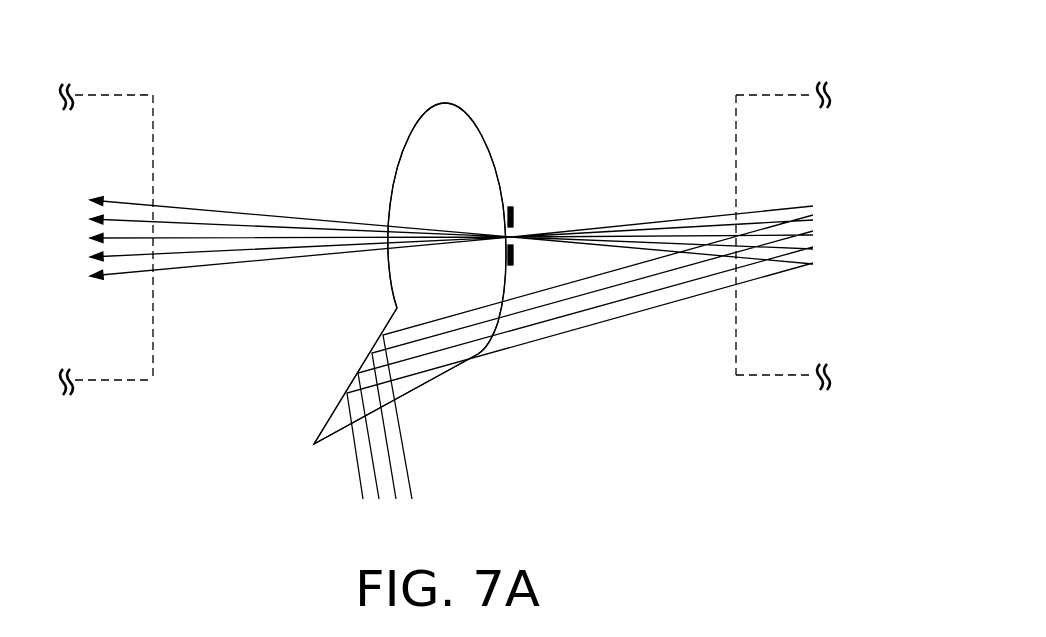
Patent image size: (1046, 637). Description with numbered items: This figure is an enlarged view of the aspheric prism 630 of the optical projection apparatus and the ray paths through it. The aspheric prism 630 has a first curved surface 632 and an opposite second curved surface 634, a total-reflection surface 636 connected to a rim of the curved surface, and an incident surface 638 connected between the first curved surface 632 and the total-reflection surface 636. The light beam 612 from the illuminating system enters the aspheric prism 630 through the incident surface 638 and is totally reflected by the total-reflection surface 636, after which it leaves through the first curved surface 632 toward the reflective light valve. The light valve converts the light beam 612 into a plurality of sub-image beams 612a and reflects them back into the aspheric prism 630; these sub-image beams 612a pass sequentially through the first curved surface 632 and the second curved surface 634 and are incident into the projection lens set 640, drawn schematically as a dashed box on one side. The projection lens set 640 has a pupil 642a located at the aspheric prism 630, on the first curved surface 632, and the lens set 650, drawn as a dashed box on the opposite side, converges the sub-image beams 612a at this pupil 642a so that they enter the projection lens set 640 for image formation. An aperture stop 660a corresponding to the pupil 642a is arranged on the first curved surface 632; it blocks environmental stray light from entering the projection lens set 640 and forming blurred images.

The projection lens set 640 is at (118, 95).
The lens set 650 is at (775, 93).
The aspheric prism 630 is at (445, 102).
The second curved surface 634 is at (398, 152).
The first curved surface 632 is at (495, 146).
The total-reflection surface 636 is at (350, 380).
The incident surface 638 is at (430, 397).
The aperture stop 660a is at (517, 213).
The pupil 642a is at (517, 229).
The light beam 612 is at (378, 480).
The sub-image beams 612a is at (268, 238).